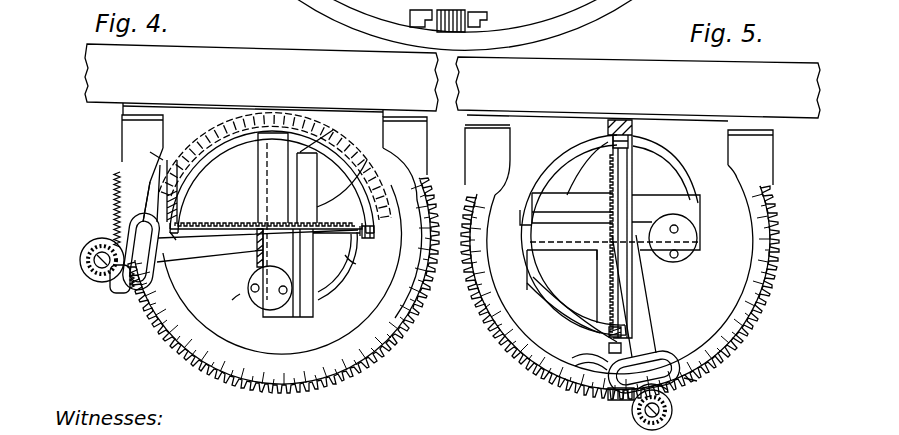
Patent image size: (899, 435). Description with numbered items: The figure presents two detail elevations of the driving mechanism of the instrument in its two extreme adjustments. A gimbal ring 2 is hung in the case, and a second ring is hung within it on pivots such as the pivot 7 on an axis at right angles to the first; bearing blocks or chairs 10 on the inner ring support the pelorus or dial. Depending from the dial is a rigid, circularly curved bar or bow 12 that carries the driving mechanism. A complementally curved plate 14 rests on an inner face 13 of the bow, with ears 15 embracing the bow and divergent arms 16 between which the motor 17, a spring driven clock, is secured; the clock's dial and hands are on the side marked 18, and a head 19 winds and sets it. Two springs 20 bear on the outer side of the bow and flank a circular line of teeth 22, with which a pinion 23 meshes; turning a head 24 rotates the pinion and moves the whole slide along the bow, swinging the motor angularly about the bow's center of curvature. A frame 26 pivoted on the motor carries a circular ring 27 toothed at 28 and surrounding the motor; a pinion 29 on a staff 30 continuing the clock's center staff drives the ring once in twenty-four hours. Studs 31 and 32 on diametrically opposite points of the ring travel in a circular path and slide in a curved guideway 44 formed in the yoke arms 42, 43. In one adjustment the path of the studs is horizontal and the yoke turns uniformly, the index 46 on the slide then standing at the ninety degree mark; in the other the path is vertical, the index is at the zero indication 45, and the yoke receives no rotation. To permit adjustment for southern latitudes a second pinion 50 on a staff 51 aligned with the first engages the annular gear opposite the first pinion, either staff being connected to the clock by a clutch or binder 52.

In FIG. 4, the ring 2 is at (246, 58).
In FIG. 5, the ring 2 is at (597, 67).
In FIG. 5, the pivot 7 is at (497, 28).
In FIG. 5, the bearing blocks or chairs 10 is at (340, 2).
In FIG. 4, the bar or bow 12 is at (407, 307).
In FIG. 5, the bar or bow 12 is at (765, 217).
In FIG. 4, the inner face 13 is at (295, 235).
In FIG. 5, the inner face 13 is at (750, 257).
In FIG. 4, the plate 14 is at (172, 311).
In FIG. 5, the plate 14 is at (620, 292).
In FIG. 4, the ears 15 is at (140, 287).
In FIG. 5, the ears 15 is at (600, 394).
In FIG. 4, the divergent arms 16 is at (225, 231).
In FIG. 5, the divergent arms 16 is at (640, 292).
In FIG. 4, the motor 17 is at (326, 108).
In FIG. 5, the motor 17 is at (700, 223).
In FIG. 4, the dial side of clock 18 is at (250, 272).
In FIG. 5, the dial side of clock 18 is at (640, 258).
In FIG. 4, the head 19 is at (266, 300).
In FIG. 5, the head 19 is at (668, 228).
In FIG. 4, the springs 20 is at (110, 224).
In FIG. 5, the springs 20 is at (612, 403).
In FIG. 4, the teeth 22 is at (283, 285).
In FIG. 5, the teeth 22 is at (512, 355).
In FIG. 4, the pinion 23 is at (97, 272).
In FIG. 5, the pinion 23 is at (675, 404).
In FIG. 4, the head 24 is at (88, 251).
In FIG. 5, the head 24 is at (675, 420).
In FIG. 4, the frame 26 is at (272, 182).
In FIG. 5, the frame 26 is at (547, 172).
In FIG. 4, the circular ring 27 is at (218, 210).
In FIG. 5, the circular ring 27 is at (597, 271).
In FIG. 4, the toothed edge 28 is at (258, 240).
In FIG. 5, the toothed edge 28 is at (607, 292).
In FIG. 4, the pinion 29 is at (358, 268).
In FIG. 5, the pinion 29 is at (630, 148).
In FIG. 4, the staff 30 is at (343, 232).
In FIG. 5, the staff 30 is at (632, 180).
In FIG. 4, the stud 31 is at (375, 238).
In FIG. 5, the stud 31 is at (627, 120).
In FIG. 4, the stud 32 is at (153, 218).
In FIG. 4, the yoke arm 42 is at (188, 135).
In FIG. 4, the yoke arm 43 is at (378, 108).
In FIG. 4, the guideway 44 is at (158, 212).
In FIG. 4, the zero indication 45 is at (357, 320).
In FIG. 5, the zero indication 45 is at (793, 381).
In FIG. 4, the index mark 46 is at (123, 238).
In FIG. 5, the index mark 46 is at (684, 366).
In FIG. 4, the pinion 50 is at (172, 237).
In FIG. 5, the pinion 50 is at (622, 334).
In FIG. 5, the staff or shaft 51 is at (622, 317).
In FIG. 5, the clutch or binder 52 is at (613, 342).